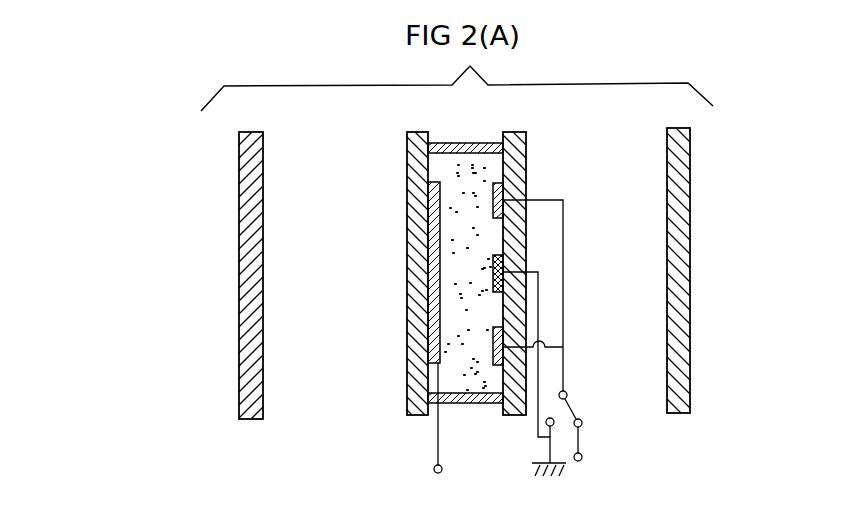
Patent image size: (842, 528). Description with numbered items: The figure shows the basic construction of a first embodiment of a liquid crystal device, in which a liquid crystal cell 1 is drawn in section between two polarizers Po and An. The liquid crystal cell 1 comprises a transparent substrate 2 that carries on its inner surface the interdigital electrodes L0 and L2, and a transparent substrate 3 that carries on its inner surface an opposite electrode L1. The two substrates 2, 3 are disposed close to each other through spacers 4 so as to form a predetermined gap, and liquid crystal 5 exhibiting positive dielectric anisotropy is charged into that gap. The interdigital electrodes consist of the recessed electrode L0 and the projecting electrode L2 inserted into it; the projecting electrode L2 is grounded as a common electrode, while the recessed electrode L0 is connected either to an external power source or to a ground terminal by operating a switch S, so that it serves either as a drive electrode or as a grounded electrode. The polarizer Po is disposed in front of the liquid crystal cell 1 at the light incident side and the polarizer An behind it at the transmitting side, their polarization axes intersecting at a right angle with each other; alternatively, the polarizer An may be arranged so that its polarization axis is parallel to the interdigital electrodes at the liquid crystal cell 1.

The liquid crystal cell 1 is at (463, 282).
The transparent substrate 2 is at (519, 156).
The transparent substrate 3 is at (408, 186).
The spacers 4 is at (466, 152).
The liquid crystal 5 is at (450, 226).
The opposite electrode L1 is at (440, 183).
The recessed electrode L0 is at (487, 185).
The projecting electrode L2 is at (492, 273).
The polarizer Po is at (245, 218).
The polarizer An is at (681, 243).
The switch S is at (546, 338).